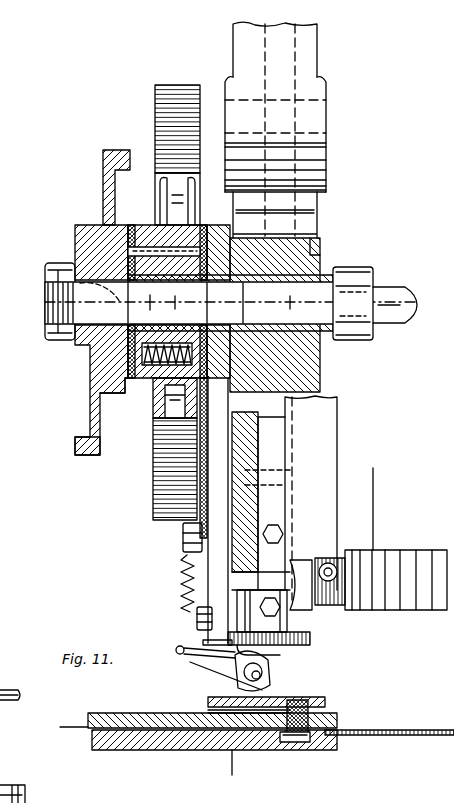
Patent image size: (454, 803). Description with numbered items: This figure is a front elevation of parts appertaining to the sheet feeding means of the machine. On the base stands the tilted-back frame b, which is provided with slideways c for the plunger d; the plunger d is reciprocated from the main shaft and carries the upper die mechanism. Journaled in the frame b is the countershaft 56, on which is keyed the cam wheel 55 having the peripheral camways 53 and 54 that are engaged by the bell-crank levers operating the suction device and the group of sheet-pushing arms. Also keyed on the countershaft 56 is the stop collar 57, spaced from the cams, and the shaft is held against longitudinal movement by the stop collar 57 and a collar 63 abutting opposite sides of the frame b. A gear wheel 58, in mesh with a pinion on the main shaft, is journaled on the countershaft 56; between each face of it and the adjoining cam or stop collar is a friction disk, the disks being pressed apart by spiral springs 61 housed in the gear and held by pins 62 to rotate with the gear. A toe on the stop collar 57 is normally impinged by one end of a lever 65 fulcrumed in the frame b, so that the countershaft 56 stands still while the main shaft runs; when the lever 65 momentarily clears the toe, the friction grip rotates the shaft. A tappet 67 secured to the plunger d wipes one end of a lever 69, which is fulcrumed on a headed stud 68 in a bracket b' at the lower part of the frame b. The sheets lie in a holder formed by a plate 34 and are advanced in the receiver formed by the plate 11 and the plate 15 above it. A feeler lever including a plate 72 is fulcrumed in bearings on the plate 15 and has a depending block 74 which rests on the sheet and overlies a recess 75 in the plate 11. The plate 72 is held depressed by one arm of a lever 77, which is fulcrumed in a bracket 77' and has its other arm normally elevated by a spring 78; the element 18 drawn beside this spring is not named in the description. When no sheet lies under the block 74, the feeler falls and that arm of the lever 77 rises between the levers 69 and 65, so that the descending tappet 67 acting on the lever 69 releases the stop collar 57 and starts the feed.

The plate 11 is at (143, 730).
The plate 15 is at (108, 718).
The spring / rod 18 is at (178, 578).
The plate 34 is at (12, 790).
The peripheral camway 53 is at (122, 394).
The peripheral camway 54 is at (92, 456).
The cam wheel 55 is at (78, 378).
The countershaft 56 is at (400, 282).
The stop collar 57 is at (220, 226).
The gear wheel 58 is at (180, 86).
The spiral spring 61 is at (167, 384).
The pin 62 is at (150, 226).
The collar 63 is at (358, 263).
The lever 65 is at (200, 548).
The tappet 67 is at (306, 606).
The headed stud 68 is at (272, 646).
The lever 69 is at (307, 645).
The plate 72 is at (326, 703).
The depending block 74 is at (332, 720).
The recess 75 is at (292, 742).
The lever 77 is at (219, 669).
The bracket 77' is at (278, 671).
The spring 78 is at (197, 609).
The tilted-back frame b is at (318, 498).
The bracket b' is at (274, 579).
The slideway C is at (277, 495).
The plunger d is at (372, 611).